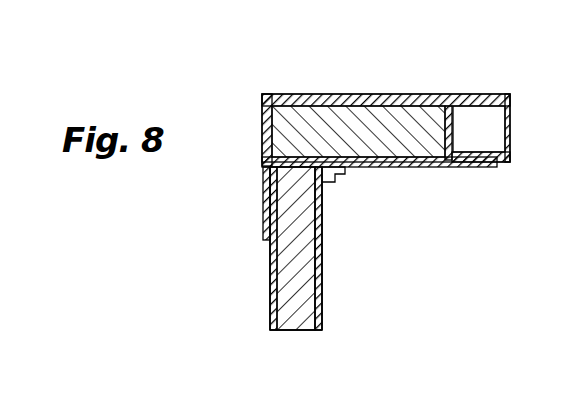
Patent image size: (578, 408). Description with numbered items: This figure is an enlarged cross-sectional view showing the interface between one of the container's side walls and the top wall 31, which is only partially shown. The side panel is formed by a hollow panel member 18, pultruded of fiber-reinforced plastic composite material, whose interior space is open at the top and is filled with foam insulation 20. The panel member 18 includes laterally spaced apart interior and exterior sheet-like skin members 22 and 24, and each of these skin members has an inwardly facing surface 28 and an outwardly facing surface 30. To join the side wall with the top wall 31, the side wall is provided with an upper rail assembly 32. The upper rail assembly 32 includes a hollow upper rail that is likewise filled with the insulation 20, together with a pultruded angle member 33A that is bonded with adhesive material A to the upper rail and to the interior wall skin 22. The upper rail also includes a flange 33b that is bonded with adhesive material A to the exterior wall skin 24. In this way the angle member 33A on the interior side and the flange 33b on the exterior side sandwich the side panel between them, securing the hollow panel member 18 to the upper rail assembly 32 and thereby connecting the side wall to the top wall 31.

The hollow panel member 18 is at (268, 318).
The foam insulation 20 is at (419, 128).
The interior skin member 22 is at (316, 334).
The exterior skin member 24 is at (273, 330).
The inwardly facing surface 28 is at (270, 288).
The outwardly facing surface 30 is at (270, 262).
The top wall 31 is at (514, 120).
The upper rail assembly 32 is at (320, 92).
The pultruded angle member 33A is at (328, 184).
The flange 33b is at (265, 228).
The adhesive material A is at (265, 192).